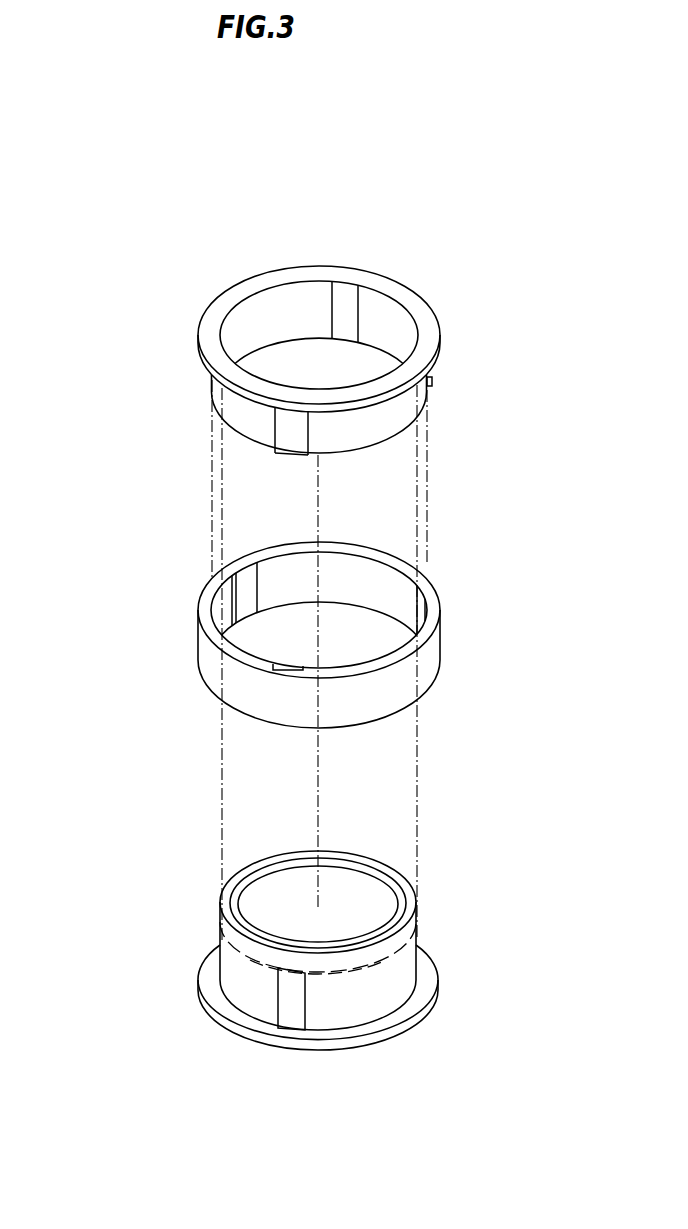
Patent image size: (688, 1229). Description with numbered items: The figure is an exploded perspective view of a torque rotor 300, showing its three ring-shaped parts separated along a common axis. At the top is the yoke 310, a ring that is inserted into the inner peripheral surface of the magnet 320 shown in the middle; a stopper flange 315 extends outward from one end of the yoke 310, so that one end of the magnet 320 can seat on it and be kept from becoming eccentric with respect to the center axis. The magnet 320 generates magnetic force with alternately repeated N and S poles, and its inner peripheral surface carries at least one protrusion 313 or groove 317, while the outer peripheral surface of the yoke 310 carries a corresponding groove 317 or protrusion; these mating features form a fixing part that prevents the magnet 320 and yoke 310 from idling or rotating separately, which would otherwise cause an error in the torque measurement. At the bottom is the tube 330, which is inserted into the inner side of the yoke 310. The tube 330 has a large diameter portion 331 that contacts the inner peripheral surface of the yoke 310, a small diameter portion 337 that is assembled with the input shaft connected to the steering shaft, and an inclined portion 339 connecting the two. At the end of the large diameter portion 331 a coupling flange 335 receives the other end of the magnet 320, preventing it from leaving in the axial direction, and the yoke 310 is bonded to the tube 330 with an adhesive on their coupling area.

The torque rotor 300 is at (58, 147).
The yoke 310 is at (165, 305).
The protrusion 313 is at (298, 432).
The stopper flange 315 is at (428, 321).
The groove 317 is at (346, 288).
The magnet 320 is at (165, 565).
The tube 330 is at (165, 829).
The large diameter portion 331 is at (412, 963).
The coupling flange 335 is at (412, 1003).
The small diameter portion 337 is at (413, 902).
The inclined portion 339 is at (232, 925).